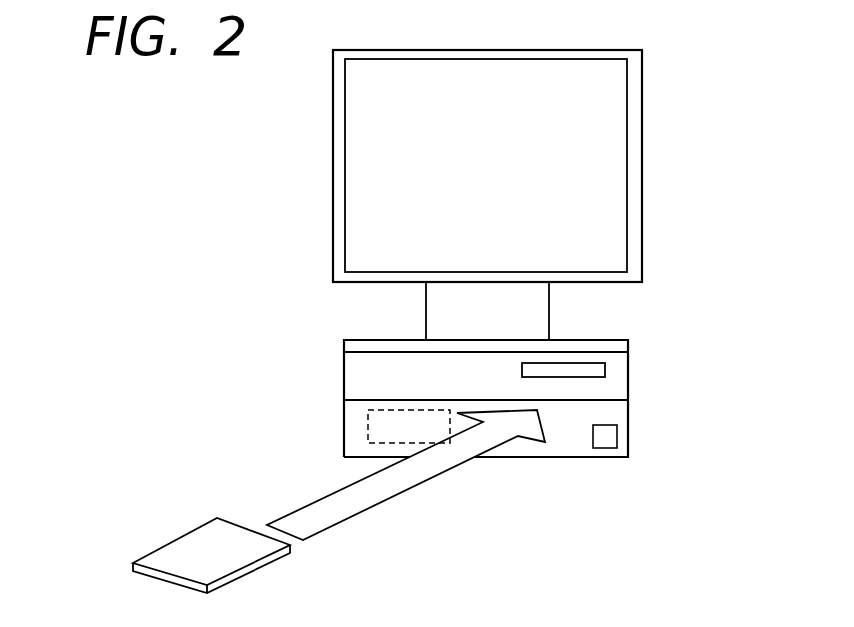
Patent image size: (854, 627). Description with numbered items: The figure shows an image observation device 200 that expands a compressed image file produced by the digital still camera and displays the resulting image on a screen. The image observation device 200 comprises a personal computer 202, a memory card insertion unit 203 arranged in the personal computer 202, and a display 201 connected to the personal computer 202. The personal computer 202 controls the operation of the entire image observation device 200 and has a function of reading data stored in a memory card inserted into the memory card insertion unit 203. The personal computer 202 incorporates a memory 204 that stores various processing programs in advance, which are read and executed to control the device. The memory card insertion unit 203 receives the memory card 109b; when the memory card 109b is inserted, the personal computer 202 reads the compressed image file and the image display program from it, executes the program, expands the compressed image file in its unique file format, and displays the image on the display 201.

The image observation device 200 is at (690, 157).
The display 201 is at (567, 50).
The personal computer 202 is at (344, 365).
The memory card insertion unit 203 is at (605, 370).
The memory 204 is at (368, 430).
The memory card 109b is at (182, 535).